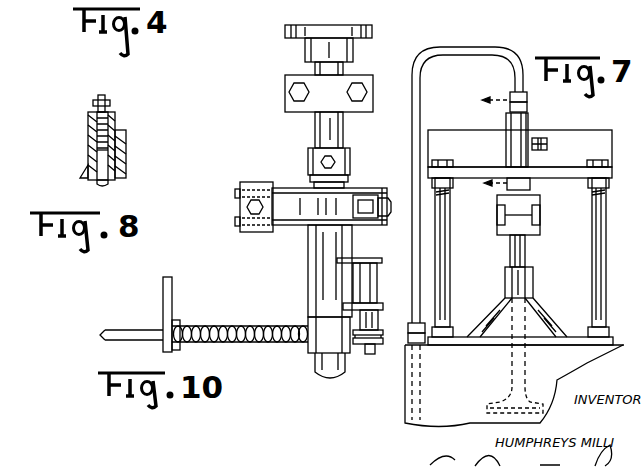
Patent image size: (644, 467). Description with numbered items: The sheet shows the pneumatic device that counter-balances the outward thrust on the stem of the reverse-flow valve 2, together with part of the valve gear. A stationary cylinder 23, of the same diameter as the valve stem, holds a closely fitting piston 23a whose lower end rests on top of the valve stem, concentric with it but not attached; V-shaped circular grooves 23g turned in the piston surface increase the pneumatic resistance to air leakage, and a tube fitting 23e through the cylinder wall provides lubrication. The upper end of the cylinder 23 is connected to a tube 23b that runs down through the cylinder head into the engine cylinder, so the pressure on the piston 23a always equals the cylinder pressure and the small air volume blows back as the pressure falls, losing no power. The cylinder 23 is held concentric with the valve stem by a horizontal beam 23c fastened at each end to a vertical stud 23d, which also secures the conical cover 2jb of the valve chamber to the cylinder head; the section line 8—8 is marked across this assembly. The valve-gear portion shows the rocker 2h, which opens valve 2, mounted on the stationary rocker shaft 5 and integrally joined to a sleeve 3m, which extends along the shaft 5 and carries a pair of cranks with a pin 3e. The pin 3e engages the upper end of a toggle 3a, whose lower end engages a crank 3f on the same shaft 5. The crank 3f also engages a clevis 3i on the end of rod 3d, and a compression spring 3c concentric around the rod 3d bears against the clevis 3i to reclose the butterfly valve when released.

In FIG. 7, the reverse-flow valve 2 is at (505, 405).
In FIG. 10, the rocker 2h is at (292, 216).
In FIG. 7, the rocker 2h is at (541, 213).
In FIG. 7, the conical cover 2jb is at (495, 312).
In FIG. 10, the toggle 3a is at (383, 346).
In FIG. 10, the compression spring 3c is at (222, 326).
In FIG. 10, the rod 3d is at (136, 330).
In FIG. 10, the pin 3e is at (372, 303).
In FIG. 10, the crank 3f is at (315, 355).
In FIG. 10, the clevis 3i is at (360, 354).
In FIG. 10, the sleeve 3m is at (318, 250).
In FIG. 10, the stationary rocker shaft 5 is at (320, 128).
In FIG. 7, the nut 8 is at (533, 190).
In FIG. 8, the stationary cylinder 23 is at (90, 124).
In FIG. 7, the stationary cylinder 23 is at (507, 143).
In FIG. 8, the piston 23a is at (88, 139).
In FIG. 7, the tube 23b is at (466, 53).
In FIG. 8, the horizontal beam 23c is at (126, 167).
In FIG. 7, the horizontal beam 23c is at (558, 166).
In FIG. 7, the vertical stud 23d is at (450, 278).
In FIG. 7, the tube fitting 23e is at (548, 144).
In FIG. 8, the V-shaped circular grooves 23g is at (88, 157).